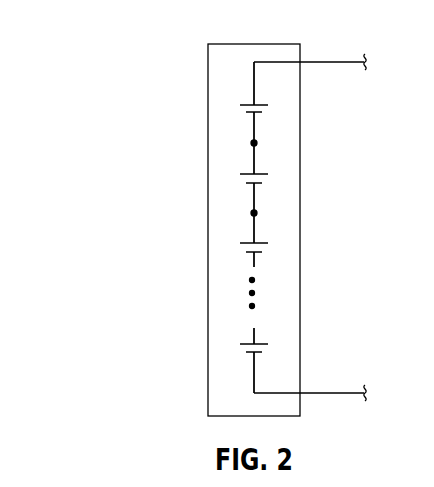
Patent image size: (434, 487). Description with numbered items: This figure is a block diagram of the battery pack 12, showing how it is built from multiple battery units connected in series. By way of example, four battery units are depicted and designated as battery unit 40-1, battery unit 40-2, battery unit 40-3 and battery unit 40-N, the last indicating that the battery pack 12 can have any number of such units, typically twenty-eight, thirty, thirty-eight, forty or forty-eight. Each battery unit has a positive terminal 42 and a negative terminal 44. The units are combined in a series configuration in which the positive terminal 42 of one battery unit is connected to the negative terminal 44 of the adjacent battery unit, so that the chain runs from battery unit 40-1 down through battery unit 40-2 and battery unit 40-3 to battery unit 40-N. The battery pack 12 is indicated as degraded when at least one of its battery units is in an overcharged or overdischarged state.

The battery pack 12 is at (118, 46).
The battery unit 40-1 is at (243, 104).
The battery unit 40-2 is at (243, 173).
The battery unit 40-3 is at (243, 242).
The battery unit 40-N is at (243, 343).
The positive terminal 42 is at (255, 79).
The negative terminal 44 is at (255, 128).